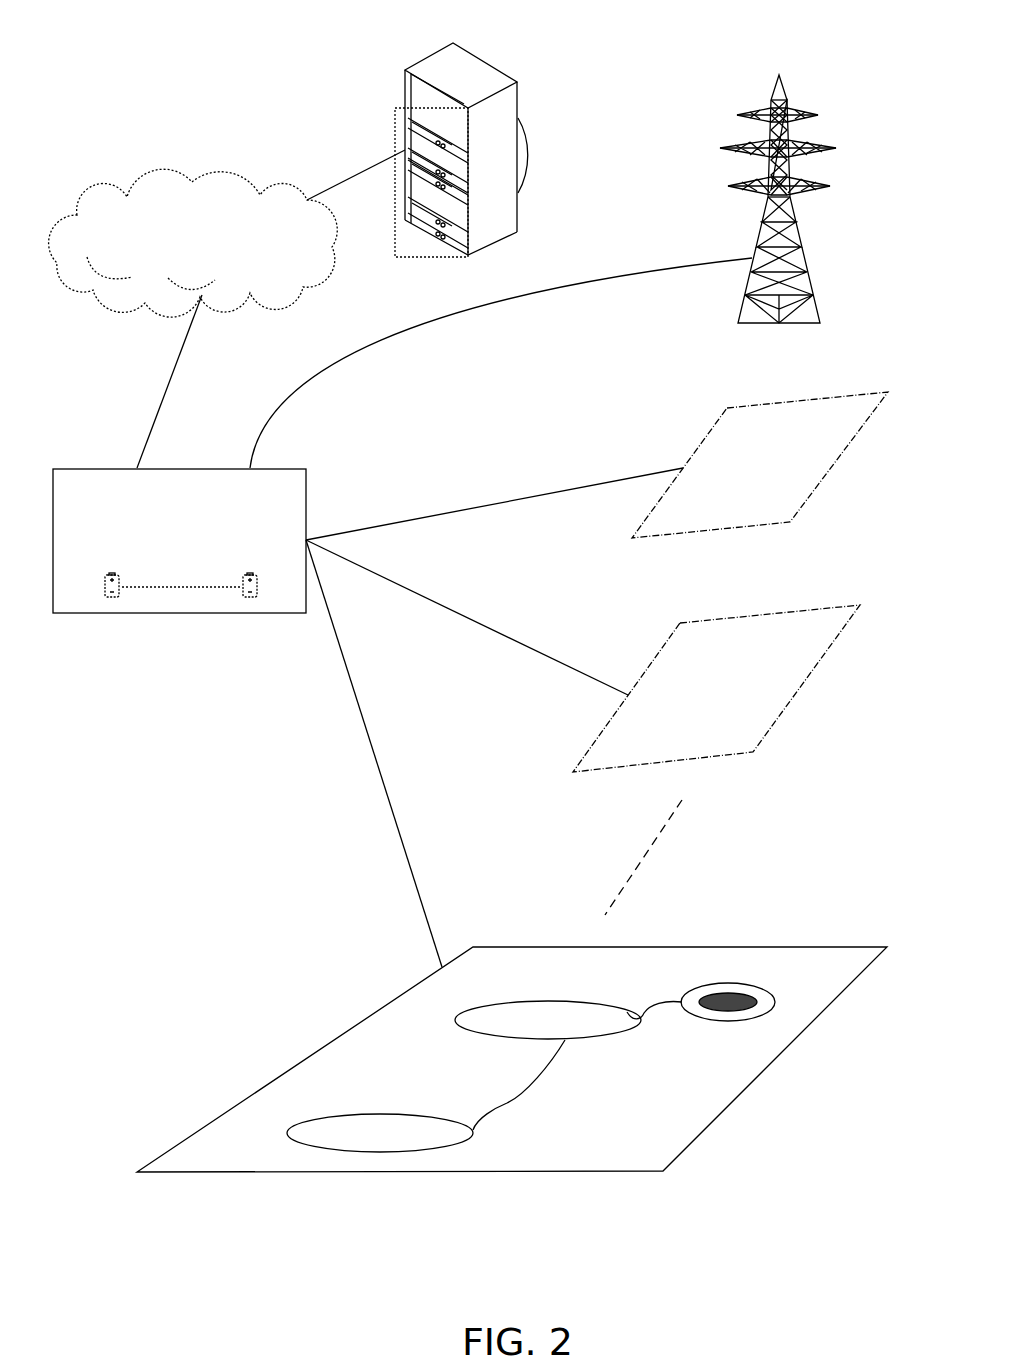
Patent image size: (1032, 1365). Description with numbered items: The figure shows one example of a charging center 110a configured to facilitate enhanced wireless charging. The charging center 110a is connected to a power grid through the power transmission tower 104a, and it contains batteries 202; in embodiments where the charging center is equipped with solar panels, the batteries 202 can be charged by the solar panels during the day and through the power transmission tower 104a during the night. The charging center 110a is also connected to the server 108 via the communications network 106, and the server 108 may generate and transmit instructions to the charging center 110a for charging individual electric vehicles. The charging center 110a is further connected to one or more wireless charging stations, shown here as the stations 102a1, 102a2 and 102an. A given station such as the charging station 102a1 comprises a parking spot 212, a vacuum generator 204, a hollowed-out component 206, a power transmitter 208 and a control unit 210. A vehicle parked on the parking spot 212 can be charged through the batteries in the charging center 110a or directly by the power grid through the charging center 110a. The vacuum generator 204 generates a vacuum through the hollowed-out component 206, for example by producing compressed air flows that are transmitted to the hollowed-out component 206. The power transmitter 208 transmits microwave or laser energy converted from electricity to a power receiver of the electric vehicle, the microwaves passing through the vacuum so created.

The wireless charging station 102a1 is at (512, 1094).
The wireless charging station 102a2 is at (707, 753).
The wireless charging station 102an is at (780, 523).
The power transmission tower 104a is at (832, 147).
The communications network 106 is at (205, 252).
The server 108 is at (430, 66).
The charging center 110a is at (152, 567).
The batteries 202 is at (250, 597).
The vacuum generator 204 is at (548, 1002).
The hollowed-out component 206 is at (700, 1020).
The power transmitter 208 is at (747, 993).
The control unit 210 is at (380, 1115).
The parking spot 212 is at (728, 1063).